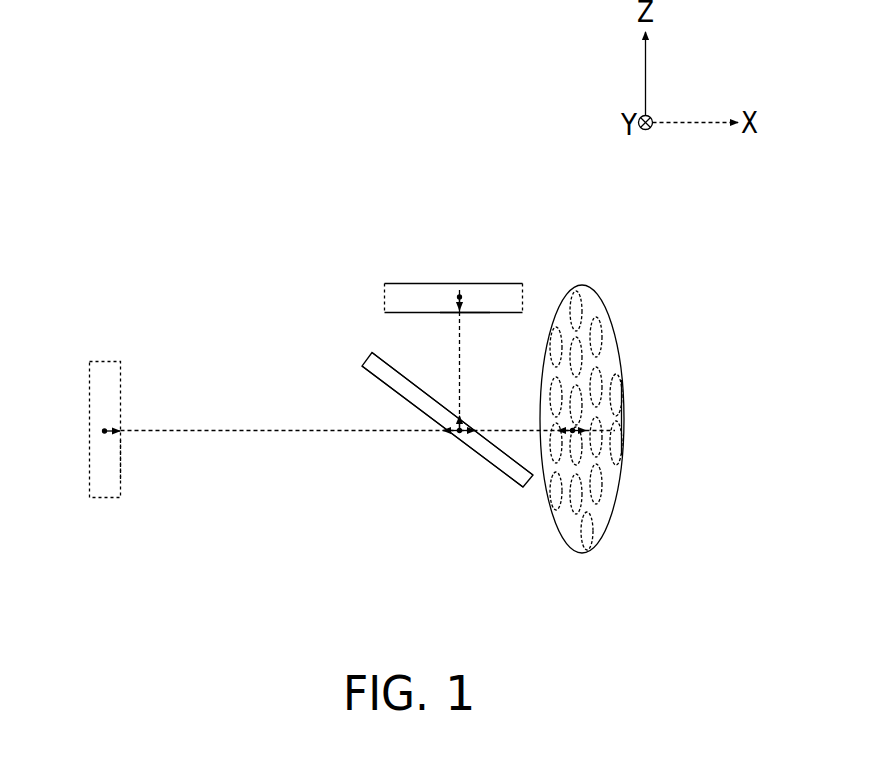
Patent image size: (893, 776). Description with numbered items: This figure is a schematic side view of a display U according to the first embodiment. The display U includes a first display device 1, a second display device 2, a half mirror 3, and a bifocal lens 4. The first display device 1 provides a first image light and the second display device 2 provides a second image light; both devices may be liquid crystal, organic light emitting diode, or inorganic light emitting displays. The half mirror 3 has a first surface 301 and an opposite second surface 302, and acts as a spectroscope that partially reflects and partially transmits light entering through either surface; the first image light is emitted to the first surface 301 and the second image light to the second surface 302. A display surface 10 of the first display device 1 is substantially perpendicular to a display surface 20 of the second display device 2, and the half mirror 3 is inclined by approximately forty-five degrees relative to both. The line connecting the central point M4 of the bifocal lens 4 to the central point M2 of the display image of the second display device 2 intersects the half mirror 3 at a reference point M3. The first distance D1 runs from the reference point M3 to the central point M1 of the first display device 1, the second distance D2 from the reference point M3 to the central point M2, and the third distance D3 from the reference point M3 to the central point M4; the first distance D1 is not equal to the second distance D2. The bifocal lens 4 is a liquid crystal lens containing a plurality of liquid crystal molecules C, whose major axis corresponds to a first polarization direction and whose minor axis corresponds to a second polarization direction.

The display U is at (152, 94).
The first display device 1 is at (482, 288).
The display surface 10 is at (463, 312).
The second display device 2 is at (105, 361).
The display surface 20 is at (120, 458).
The half mirror 3 is at (531, 484).
The first surface 301 is at (377, 352).
The second surface 302 is at (507, 478).
The bifocal lens 4 is at (584, 553).
The liquid crystal molecules C is at (600, 333).
The central point M1 is at (459, 283).
The central point M2 is at (104, 424).
The reference point M3 is at (457, 435).
The central point M4 is at (583, 432).
The first distance D1 is at (444, 363).
The second distance D2 is at (290, 416).
The third distance D3 is at (538, 417).